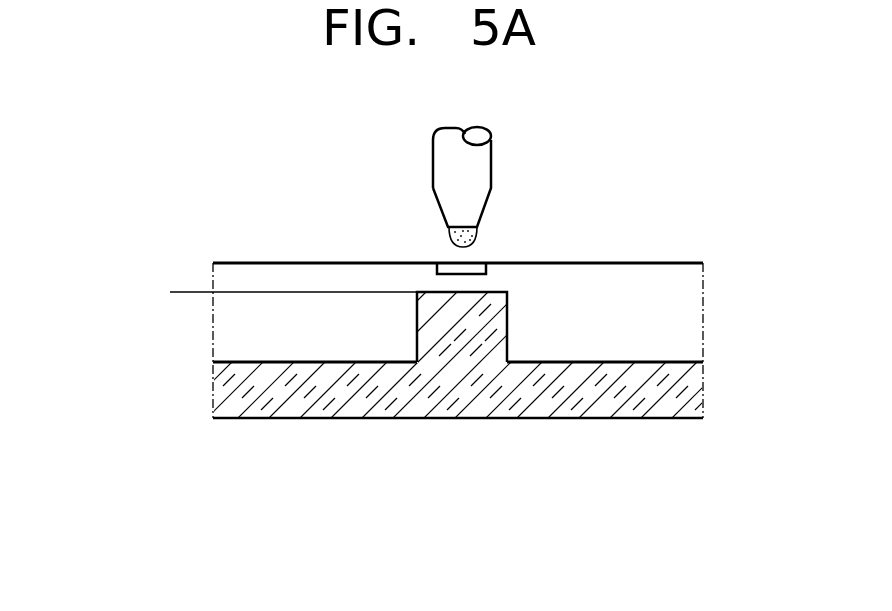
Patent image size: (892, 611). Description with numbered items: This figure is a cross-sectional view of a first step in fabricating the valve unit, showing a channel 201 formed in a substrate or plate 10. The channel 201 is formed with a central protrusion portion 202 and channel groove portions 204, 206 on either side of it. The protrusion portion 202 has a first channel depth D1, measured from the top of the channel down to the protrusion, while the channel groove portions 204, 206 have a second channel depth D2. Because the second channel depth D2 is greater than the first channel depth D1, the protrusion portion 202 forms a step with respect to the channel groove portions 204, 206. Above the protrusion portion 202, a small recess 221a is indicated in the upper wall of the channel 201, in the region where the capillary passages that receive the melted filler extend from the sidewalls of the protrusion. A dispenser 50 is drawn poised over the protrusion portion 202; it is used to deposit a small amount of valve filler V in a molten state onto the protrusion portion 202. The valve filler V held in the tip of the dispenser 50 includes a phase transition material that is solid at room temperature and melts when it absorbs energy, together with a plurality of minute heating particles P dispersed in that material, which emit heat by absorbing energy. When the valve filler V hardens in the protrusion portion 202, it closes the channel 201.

The substrate 10 is at (697, 390).
The channel 201 is at (605, 525).
The protrusion portion 202 is at (465, 343).
The channel groove portion 204 is at (343, 343).
The channel groove portion 206 is at (608, 345).
The recess in the second electrode 221a is at (437, 271).
The dispenser 50 is at (438, 157).
The heating particles P is at (450, 231).
The valve filler V is at (482, 234).
The first channel depth D1 is at (177, 327).
The second channel depth D2 is at (212, 362).